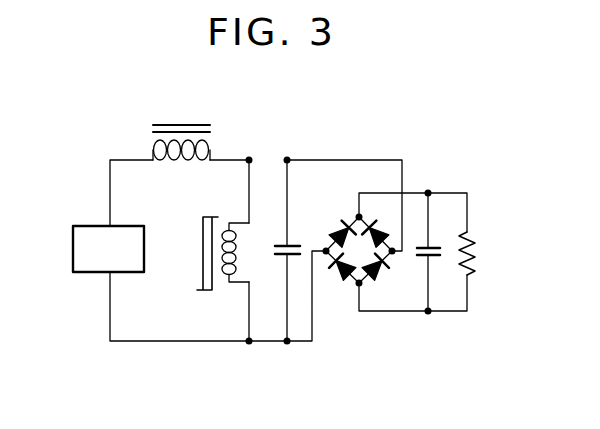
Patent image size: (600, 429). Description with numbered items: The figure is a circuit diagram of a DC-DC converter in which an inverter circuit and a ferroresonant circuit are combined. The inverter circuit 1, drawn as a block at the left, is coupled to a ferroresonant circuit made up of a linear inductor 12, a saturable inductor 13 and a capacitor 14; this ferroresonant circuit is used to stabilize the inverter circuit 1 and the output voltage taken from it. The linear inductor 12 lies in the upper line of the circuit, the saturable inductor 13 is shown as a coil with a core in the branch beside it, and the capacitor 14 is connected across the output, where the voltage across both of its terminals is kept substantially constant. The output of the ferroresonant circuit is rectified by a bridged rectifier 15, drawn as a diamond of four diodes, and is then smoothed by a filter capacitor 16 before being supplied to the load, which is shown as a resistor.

The inverter circuit 1 is at (80, 275).
The linear inductor 12 is at (217, 133).
The saturable inductor 13 is at (197, 278).
The capacitor 14 is at (282, 260).
The bridged rectifier 15 is at (347, 283).
The filter capacitor 16 is at (437, 245).